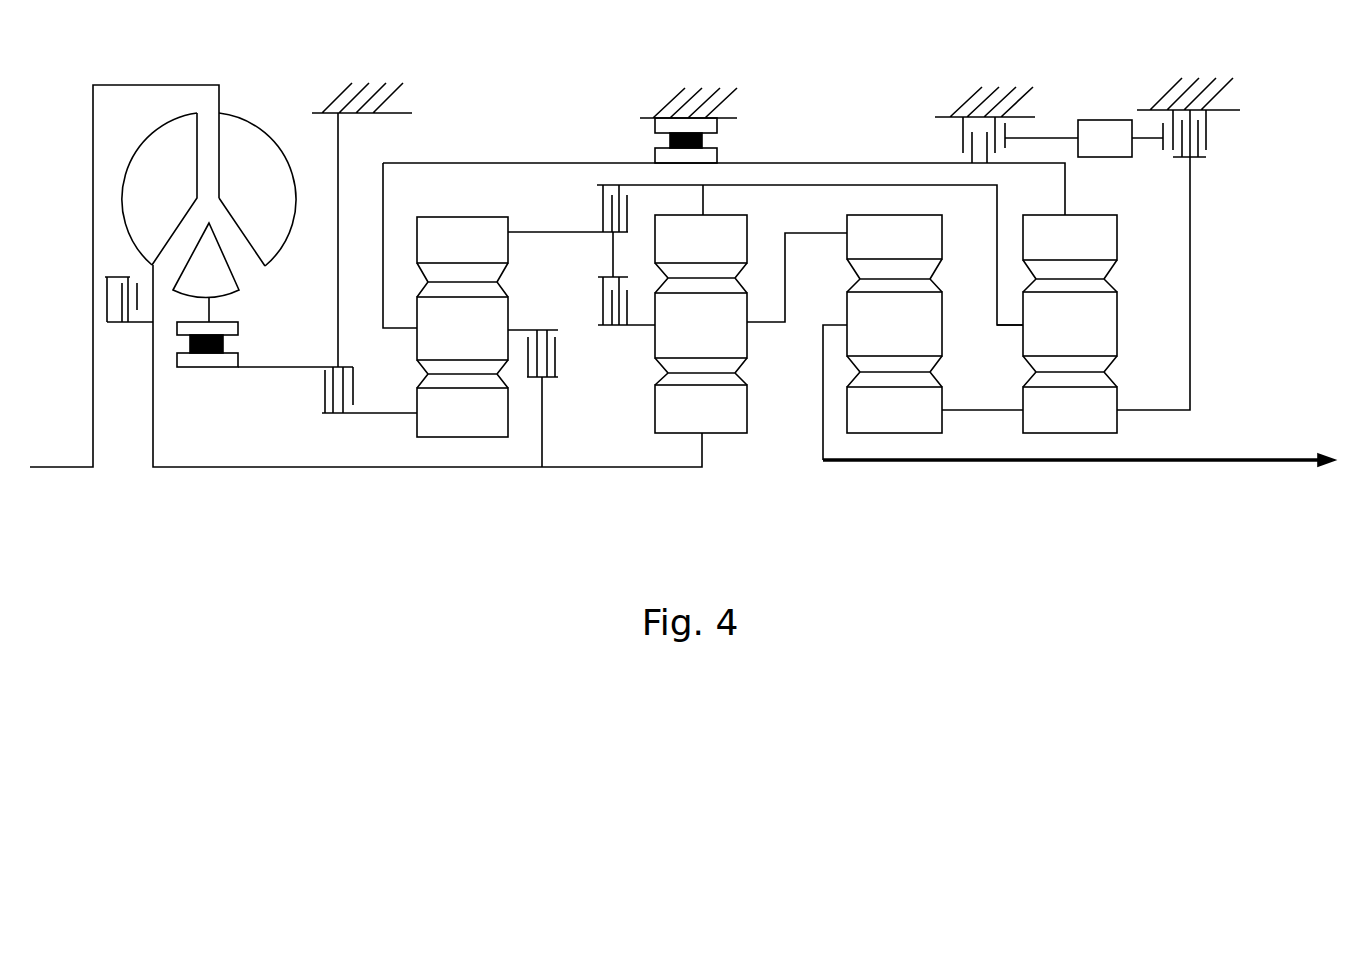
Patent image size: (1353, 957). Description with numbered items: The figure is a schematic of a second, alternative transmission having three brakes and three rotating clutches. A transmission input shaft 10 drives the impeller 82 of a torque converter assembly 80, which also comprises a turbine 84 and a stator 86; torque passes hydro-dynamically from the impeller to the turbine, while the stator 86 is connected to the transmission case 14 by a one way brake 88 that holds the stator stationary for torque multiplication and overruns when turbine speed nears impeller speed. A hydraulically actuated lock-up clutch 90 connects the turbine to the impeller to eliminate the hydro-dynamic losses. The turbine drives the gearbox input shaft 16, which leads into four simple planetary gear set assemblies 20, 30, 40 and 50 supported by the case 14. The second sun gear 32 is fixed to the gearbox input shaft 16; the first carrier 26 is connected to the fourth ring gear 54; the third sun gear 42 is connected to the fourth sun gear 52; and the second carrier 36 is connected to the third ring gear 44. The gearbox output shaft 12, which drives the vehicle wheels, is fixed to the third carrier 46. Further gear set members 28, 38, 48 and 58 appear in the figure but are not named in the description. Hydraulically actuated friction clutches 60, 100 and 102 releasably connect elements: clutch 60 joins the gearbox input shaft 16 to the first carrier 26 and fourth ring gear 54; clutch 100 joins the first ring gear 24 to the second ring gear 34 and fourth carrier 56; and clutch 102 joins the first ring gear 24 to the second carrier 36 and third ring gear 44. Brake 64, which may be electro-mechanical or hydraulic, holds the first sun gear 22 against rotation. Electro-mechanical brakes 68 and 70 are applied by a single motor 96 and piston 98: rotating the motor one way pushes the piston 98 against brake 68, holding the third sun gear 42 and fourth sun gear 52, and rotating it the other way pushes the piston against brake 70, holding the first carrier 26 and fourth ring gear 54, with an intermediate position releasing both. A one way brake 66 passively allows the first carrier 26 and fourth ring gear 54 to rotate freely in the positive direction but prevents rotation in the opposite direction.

The transmission input shaft 10 is at (52, 465).
The gearbox output shaft 12 is at (1188, 463).
The transmission case 14 is at (340, 102).
The gearbox input shaft 16 is at (587, 467).
The first planetary gear set assembly 20 is at (462, 360).
The first sun gear 22 is at (450, 423).
The first ring gear 24 is at (450, 253).
The first carrier 26 is at (393, 328).
The carrier of first gear set 28 is at (462, 328).
The second planetary gear set assembly 30 is at (701, 359).
The second sun gear 32 is at (688, 419).
The second ring gear 34 is at (689, 252).
The second carrier 36 is at (783, 330).
The carrier of second gear set 38 is at (688, 338).
The third planetary gear set assembly 40 is at (935, 359).
The third sun gear 42 is at (894, 410).
The third ring gear 44 is at (894, 237).
The third carrier 46 is at (838, 305).
The carrier of third gear set 48 is at (881, 335).
The fourth planetary gear set assembly 50 is at (1070, 359).
The fourth sun gear 52 is at (1056, 419).
The fourth ring gear 54 is at (1070, 237).
The fourth carrier 56 is at (1013, 327).
The carrier of fourth gear set 58 is at (1056, 335).
The clutch 60 is at (558, 360).
The brake 64 is at (322, 377).
The one way brake 66 is at (655, 147).
The brake 68 is at (1207, 132).
The brake 70 is at (963, 152).
The torque converter assembly 80 is at (206, 308).
The impeller 82 is at (257, 189).
The turbine 84 is at (159, 189).
The stator 86 is at (237, 292).
The one way brake 88 is at (195, 370).
The lock-up clutch 90 is at (135, 323).
The motor 96 is at (1093, 149).
The piston 98 is at (1053, 138).
The clutch 100 is at (597, 218).
The clutch 102 is at (598, 303).